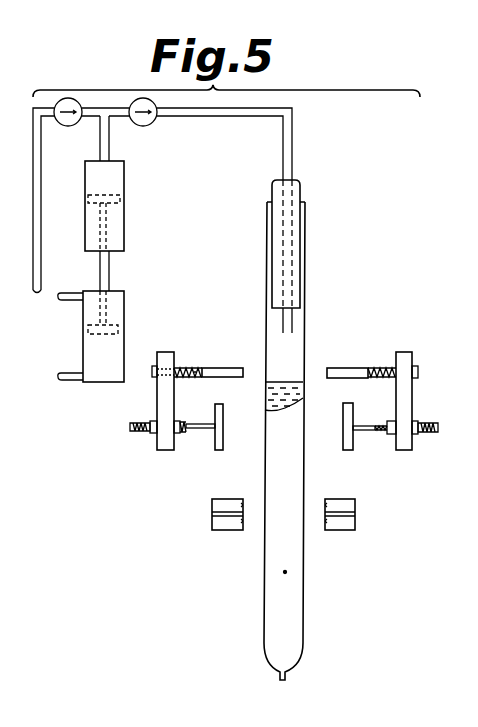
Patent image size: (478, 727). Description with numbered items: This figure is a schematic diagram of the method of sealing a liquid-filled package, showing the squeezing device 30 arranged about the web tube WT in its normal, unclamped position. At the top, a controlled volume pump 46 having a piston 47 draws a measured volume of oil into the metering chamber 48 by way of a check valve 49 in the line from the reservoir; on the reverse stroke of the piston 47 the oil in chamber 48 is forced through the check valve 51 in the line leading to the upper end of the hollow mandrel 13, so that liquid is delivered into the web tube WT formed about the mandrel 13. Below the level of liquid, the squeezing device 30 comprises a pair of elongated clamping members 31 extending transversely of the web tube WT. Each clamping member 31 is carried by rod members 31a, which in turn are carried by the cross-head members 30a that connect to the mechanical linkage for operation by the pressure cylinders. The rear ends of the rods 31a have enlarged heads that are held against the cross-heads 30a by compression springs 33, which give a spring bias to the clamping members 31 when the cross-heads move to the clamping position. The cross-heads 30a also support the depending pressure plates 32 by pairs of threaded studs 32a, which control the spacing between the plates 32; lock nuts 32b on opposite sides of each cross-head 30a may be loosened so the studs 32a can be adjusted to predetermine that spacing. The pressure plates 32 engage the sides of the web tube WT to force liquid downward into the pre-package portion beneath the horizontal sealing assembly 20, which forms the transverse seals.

The hollow mandrel 13 is at (300, 190).
The web tube WT is at (305, 258).
The high frequency sealing assembly 20 is at (331, 426).
The squeezing device 30 is at (398, 343).
The cross-head members 30a is at (157, 400).
The clamping members 31 is at (233, 368).
The rod members 31a is at (192, 368).
The pressure plates 32 is at (223, 442).
The threaded studs 32a is at (130, 427).
The lock nuts 32b is at (154, 433).
The compression springs 33 is at (194, 373).
The controlled volume pump 46 is at (124, 303).
The piston 47 is at (109, 265).
The metering chamber 48 is at (124, 175).
The check valve 49 is at (68, 126).
The check valve 51 is at (143, 126).